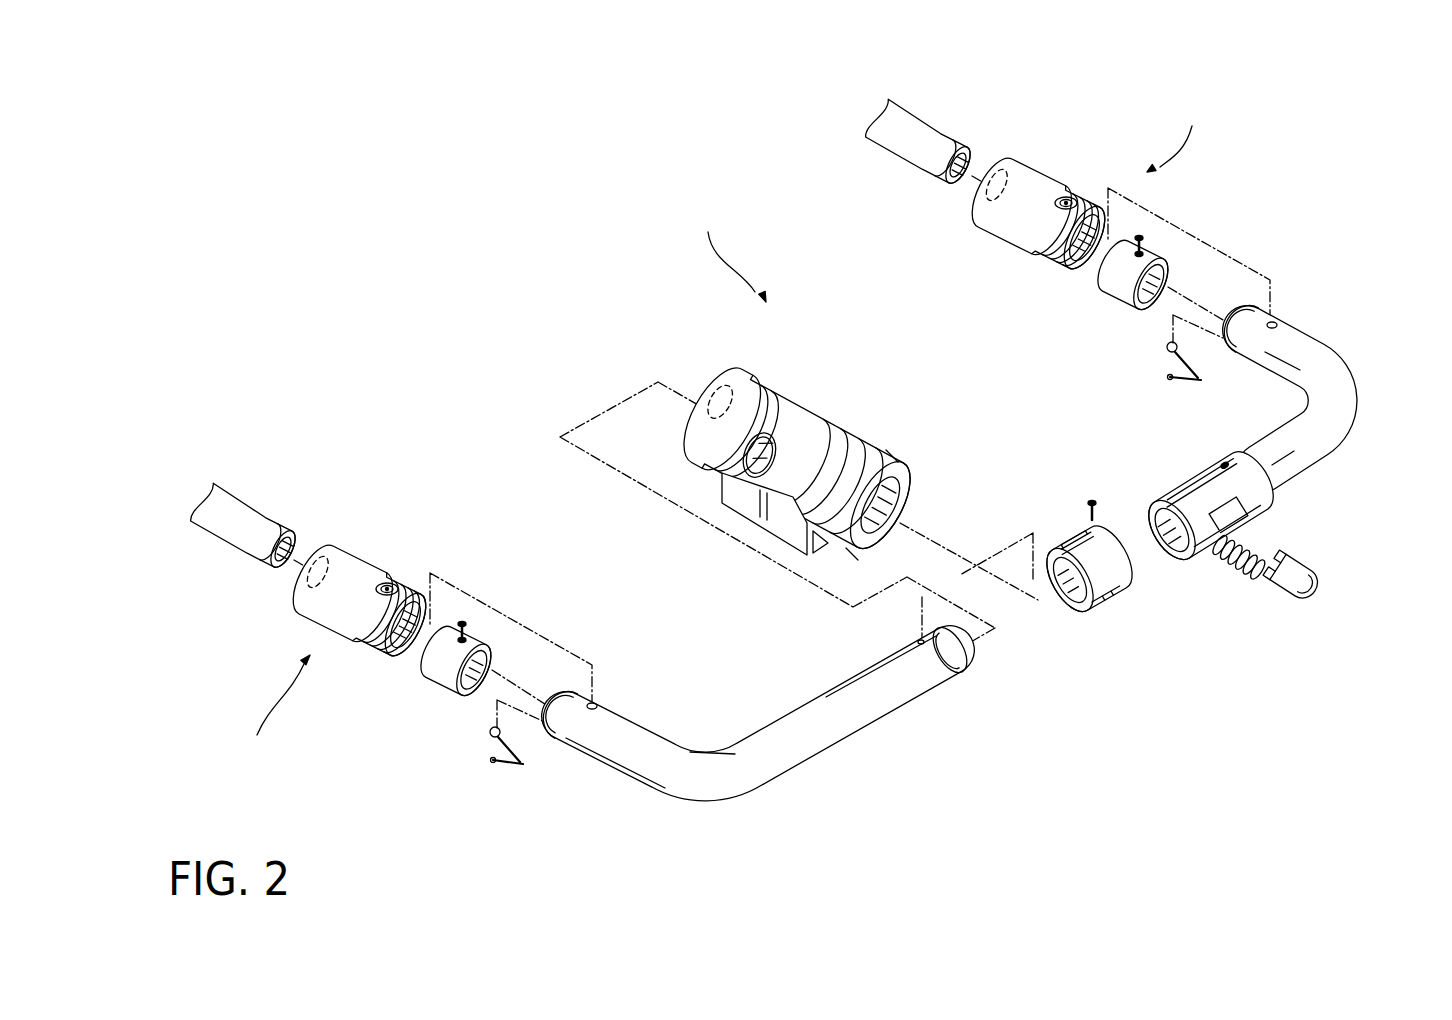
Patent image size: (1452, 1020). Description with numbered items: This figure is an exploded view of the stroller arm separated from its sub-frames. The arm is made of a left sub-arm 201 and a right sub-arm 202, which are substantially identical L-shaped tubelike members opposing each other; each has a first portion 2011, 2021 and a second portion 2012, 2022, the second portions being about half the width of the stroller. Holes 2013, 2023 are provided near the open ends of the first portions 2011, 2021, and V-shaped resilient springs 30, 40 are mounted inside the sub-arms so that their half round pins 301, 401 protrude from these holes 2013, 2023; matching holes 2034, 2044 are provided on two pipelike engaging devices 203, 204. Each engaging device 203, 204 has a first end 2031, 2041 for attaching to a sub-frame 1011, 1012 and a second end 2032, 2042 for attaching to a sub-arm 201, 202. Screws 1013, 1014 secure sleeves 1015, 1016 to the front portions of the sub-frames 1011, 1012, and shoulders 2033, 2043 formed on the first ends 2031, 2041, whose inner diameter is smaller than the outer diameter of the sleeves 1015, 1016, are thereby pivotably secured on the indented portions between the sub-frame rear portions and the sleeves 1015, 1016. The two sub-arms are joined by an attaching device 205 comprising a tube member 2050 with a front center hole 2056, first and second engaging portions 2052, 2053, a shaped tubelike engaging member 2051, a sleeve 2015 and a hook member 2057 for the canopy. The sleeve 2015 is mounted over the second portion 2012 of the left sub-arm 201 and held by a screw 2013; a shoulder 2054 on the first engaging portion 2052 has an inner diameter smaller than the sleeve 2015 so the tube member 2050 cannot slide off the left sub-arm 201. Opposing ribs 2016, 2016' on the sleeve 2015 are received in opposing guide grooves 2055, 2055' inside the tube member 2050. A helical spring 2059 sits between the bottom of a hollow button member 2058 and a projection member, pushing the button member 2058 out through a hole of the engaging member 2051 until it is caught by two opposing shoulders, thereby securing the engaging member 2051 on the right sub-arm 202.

The left sub-arm 201 is at (706, 799).
The first portion 2011 is at (662, 752).
The second portion 2012 is at (930, 676).
The hole 2013 is at (596, 704).
The right sub-arm 202 is at (1338, 412).
The first portion 2021 is at (1332, 340).
The second portion 2022 is at (1290, 478).
The hole 2023 is at (1280, 323).
The engaging device 203 is at (264, 699).
The first end 2031 is at (334, 546).
The second end 2032 is at (416, 592).
The shoulder 2033 is at (294, 590).
The hole 2034 is at (387, 583).
The engaging device 204 is at (1188, 138).
The first end 2041 is at (1004, 162).
The second end 2042 is at (1032, 248).
The shoulder 2043 is at (988, 200).
The hole 2044 is at (1066, 197).
The attaching device 205 is at (724, 251).
The tube member 2050 is at (808, 432).
The engaging member 2051 is at (1248, 513).
The first engaging portion 2052 is at (732, 374).
The second engaging portion 2053 is at (878, 468).
The shoulder 2054 is at (705, 424).
The guide groove 2055 is at (842, 600).
The guide groove 2055' is at (949, 451).
The front center hole 2056 is at (745, 484).
The hook member 2057 is at (790, 542).
The button member 2058 is at (1310, 600).
The helical spring 2059 is at (1230, 573).
The sleeve 2015 is at (1116, 587).
The rib 2016 is at (1092, 648).
The rib 2016' is at (1036, 516).
The sub-frame 1011 is at (263, 519).
The sub-frame 1012 is at (890, 148).
The screw 1013 is at (464, 622).
The screw 1014 is at (1141, 236).
The sleeve 1015 is at (440, 682).
The sleeve 1016 is at (1117, 298).
The resilient spring 30 is at (514, 767).
The pin 301 is at (490, 737).
The resilient spring 40 is at (1195, 382).
The pin 401 is at (1178, 343).